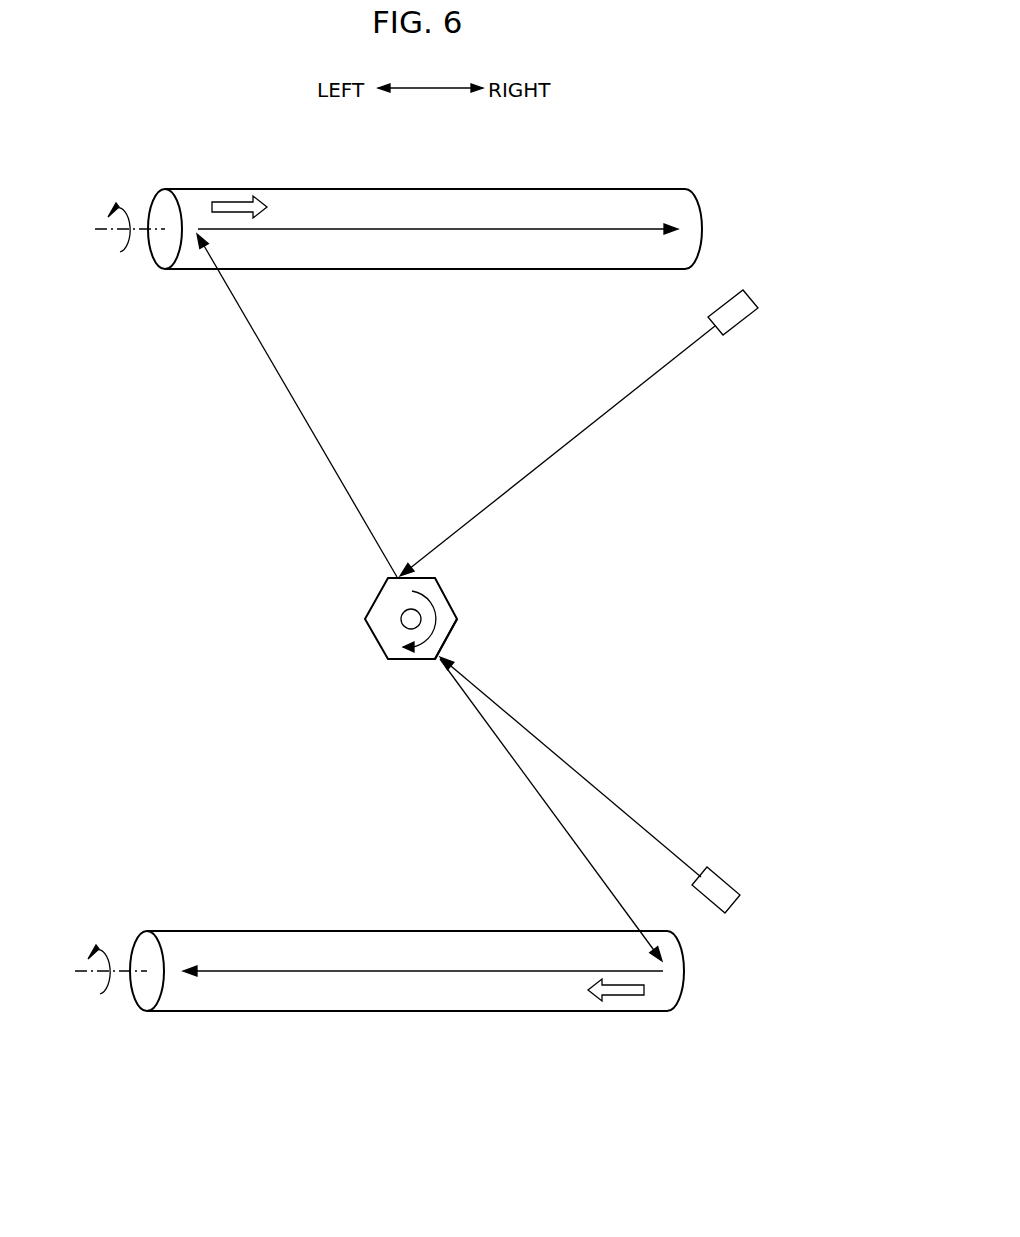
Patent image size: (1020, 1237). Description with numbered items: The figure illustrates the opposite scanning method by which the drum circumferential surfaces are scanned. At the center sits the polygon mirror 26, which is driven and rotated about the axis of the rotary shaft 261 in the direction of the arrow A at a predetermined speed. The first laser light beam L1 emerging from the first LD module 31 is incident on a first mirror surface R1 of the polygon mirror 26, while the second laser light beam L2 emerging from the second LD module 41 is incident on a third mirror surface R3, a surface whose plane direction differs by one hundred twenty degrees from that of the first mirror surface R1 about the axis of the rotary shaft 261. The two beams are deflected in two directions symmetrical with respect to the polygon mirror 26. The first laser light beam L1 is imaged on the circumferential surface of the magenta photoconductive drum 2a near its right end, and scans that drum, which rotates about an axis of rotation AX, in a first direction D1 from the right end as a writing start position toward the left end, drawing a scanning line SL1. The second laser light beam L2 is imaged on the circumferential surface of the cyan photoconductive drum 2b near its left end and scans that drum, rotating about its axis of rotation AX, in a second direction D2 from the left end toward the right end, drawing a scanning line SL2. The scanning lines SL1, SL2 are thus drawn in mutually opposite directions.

The magenta photoconductive drum 2a is at (228, 928).
The cyan photoconductive drum 2b is at (646, 188).
The polygon mirror 26 is at (467, 594).
The rotary shaft 261 is at (402, 610).
The first LD module 31 is at (713, 908).
The second LD module 41 is at (713, 335).
The first laser light beam L1 is at (560, 753).
The second laser light beam L2 is at (592, 428).
The first mirror surface R1 is at (447, 642).
The third mirror surface R3 is at (428, 575).
The scanning line SL1 is at (455, 968).
The scanning line SL2 is at (472, 230).
The first direction D1 is at (613, 998).
The second direction D2 is at (235, 198).
The arrow A is at (432, 660).
The axis of rotation AX is at (107, 235).